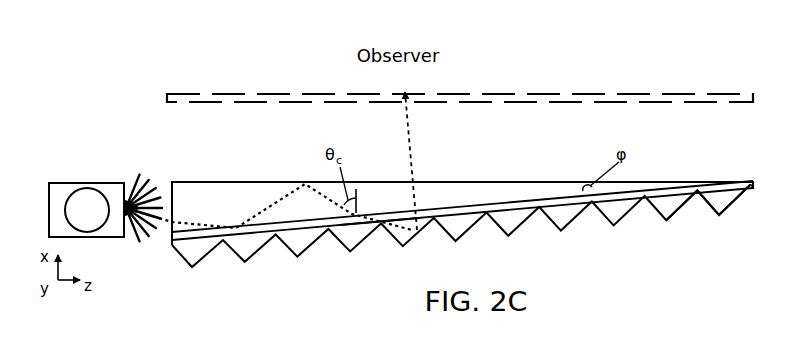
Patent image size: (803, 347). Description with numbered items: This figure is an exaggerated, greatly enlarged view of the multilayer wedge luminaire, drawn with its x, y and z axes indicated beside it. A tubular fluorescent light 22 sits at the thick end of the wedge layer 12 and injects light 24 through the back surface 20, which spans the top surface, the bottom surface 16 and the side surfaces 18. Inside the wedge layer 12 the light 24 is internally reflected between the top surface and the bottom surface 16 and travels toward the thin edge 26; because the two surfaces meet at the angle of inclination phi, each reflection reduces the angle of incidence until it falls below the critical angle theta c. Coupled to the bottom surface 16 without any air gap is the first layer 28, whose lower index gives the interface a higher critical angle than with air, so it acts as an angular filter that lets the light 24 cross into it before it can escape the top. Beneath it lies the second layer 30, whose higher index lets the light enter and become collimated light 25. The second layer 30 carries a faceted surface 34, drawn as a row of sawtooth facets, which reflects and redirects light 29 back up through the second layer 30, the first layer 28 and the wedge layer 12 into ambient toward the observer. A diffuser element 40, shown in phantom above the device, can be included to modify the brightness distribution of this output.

The wedge layer 12 is at (522, 190).
The bottom surface 16 is at (285, 221).
The side surfaces 18 is at (246, 181).
The back surface 20 is at (168, 195).
The tubular fluorescent light 22 is at (99, 177).
The light 24 is at (278, 199).
The collimated light 25 is at (372, 218).
The edge 26 is at (720, 178).
The first layer 28 is at (665, 188).
The light 29 is at (408, 131).
The second layer 30 is at (564, 218).
The faceted surface 34 is at (707, 212).
The diffuser element 40 is at (502, 101).